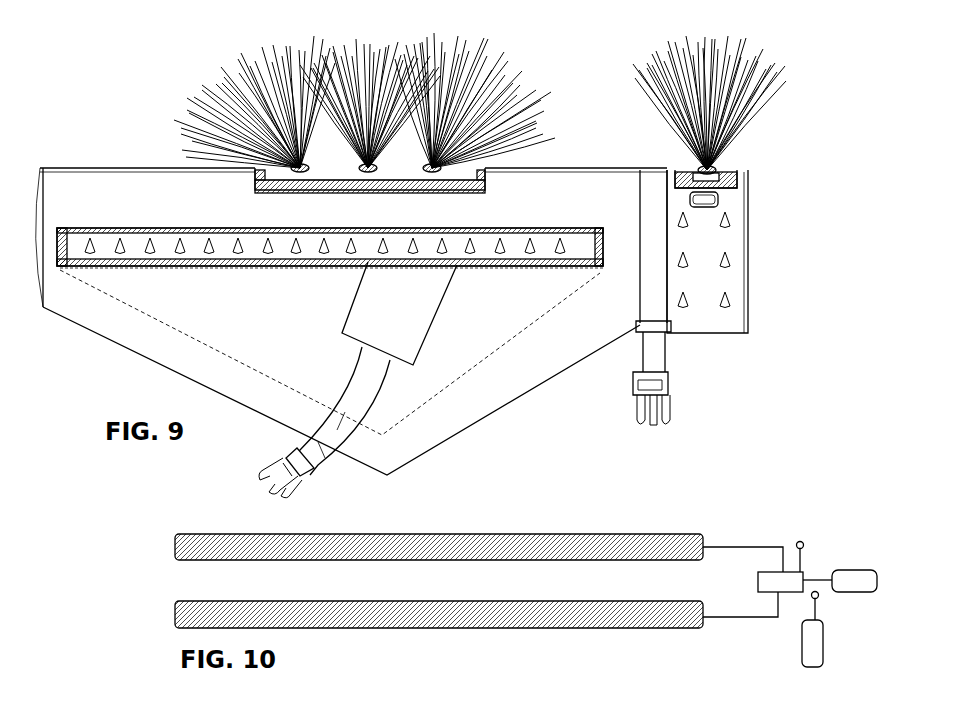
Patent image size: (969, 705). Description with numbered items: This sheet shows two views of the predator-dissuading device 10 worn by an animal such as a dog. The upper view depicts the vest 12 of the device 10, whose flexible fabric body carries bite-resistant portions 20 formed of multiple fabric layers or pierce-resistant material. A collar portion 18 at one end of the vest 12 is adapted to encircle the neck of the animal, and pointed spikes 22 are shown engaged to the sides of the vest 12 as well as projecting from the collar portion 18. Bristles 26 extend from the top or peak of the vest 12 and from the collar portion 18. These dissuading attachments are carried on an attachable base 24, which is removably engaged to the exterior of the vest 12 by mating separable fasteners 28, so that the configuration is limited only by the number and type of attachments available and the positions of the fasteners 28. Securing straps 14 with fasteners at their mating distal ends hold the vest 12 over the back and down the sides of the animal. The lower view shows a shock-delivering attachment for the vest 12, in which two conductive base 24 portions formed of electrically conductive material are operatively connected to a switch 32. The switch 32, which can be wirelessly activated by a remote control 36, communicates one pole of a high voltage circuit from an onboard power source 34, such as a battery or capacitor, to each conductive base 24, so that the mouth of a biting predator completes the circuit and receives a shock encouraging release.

In FIG. 9, the device 10 is at (122, 134).
In FIG. 9, the vest 12 is at (100, 167).
In FIG. 9, the securing straps 14 is at (358, 400).
In FIG. 9, the collar portion 18 is at (680, 325).
In FIG. 9, the bite-resistant portions 20 is at (170, 305).
In FIG. 9, the spikes 22 is at (240, 242).
In FIG. 9, the base 24 is at (275, 176).
In FIG. 10, the base 24 is at (475, 533).
In FIG. 9, the bristles 26 is at (660, 120).
In FIG. 9, the separable fastener 28 is at (480, 181).
In FIG. 10, the switch 32 is at (792, 572).
In FIG. 10, the power source 34 is at (845, 574).
In FIG. 10, the remote control 36 is at (802, 648).